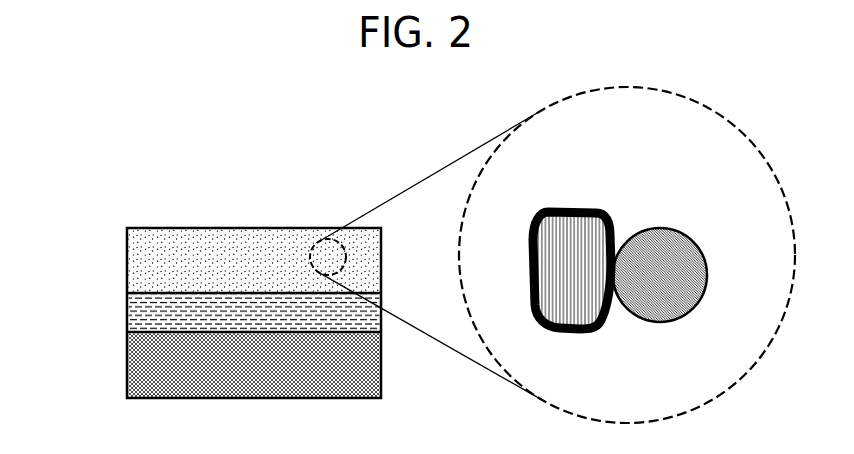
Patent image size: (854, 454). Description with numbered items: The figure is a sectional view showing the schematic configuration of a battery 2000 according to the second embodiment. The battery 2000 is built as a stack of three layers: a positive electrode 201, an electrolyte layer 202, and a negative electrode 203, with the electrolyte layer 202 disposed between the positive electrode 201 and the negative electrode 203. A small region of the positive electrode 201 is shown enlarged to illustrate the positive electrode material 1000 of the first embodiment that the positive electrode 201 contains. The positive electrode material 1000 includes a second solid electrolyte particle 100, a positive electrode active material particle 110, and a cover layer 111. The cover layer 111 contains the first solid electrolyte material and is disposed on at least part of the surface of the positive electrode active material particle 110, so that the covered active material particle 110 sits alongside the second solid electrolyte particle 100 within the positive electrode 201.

The battery 2000 is at (282, 181).
The positive electrode 201 is at (158, 245).
The electrolyte layer 202 is at (158, 307).
The negative electrode 203 is at (158, 363).
The positive electrode material 1000 is at (648, 181).
The second solid electrolyte particle 100 is at (683, 253).
The positive electrode active material particle 110 is at (570, 265).
The cover layer 111 is at (565, 328).